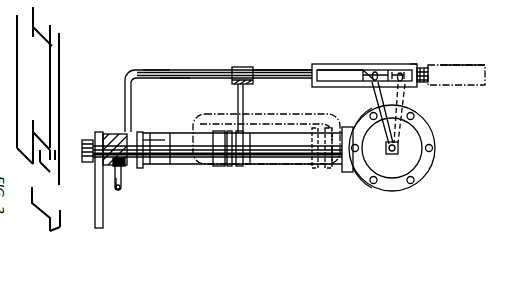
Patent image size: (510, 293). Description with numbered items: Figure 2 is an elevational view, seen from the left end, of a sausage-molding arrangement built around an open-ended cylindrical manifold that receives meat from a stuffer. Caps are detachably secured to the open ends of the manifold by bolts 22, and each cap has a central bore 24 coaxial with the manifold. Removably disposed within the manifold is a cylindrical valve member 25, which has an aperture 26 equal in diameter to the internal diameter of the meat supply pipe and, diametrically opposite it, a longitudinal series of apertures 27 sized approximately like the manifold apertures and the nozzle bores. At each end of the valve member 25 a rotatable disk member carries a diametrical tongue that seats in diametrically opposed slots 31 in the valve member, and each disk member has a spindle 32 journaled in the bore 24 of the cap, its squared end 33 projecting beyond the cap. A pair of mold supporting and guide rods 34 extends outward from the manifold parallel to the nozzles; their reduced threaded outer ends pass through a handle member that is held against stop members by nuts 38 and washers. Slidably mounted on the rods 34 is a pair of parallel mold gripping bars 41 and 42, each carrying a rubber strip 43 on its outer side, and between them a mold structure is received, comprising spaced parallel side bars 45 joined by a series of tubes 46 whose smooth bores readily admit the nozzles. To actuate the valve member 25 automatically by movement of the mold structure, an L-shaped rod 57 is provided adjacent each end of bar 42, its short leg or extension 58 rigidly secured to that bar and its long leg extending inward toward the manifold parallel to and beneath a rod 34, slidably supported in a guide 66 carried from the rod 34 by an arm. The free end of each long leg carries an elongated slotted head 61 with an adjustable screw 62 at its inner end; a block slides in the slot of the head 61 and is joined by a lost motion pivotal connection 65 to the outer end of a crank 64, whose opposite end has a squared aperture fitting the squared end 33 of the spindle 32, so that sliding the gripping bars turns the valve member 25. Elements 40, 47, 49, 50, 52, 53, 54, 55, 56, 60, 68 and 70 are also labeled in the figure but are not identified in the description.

The bolts 22 is at (413, 62).
The central bore 24 is at (470, 63).
The cylindrical valve member 25 is at (412, 152).
The aperture 26 is at (352, 160).
The apertures 27 is at (346, 170).
The slots 31 is at (160, 168).
The spindle 32 is at (258, 166).
The squared end 33 is at (397, 152).
The mold supporting and guide rods 34 is at (293, 158).
The nuts 38 is at (90, 138).
The tube 40 is at (160, 70).
The mold gripping bar 41 is at (176, 158).
The mold gripping bar 42 is at (180, 147).
The rubber strip 43 is at (230, 167).
The side bars 45 is at (218, 168).
The tubes 46 is at (167, 110).
The spring 47 is at (241, 167).
The pipe 49 is at (158, 136).
The pin 50 is at (124, 170).
The housing 52 is at (193, 117).
The packing 53 is at (110, 132).
The gland 54 is at (139, 168).
The block 55 is at (117, 134).
The pin 56 is at (118, 191).
The L-shaped rod 57 is at (97, 195).
The short leg or extension 58 is at (236, 67).
The rod 60 is at (342, 75).
The slotted head 61 is at (248, 96).
The adjustable screw 62 is at (421, 67).
The crank 64 is at (362, 72).
The lost motion pivotal connection 65 is at (377, 72).
The guides 66 is at (246, 72).
The elbow 68 is at (128, 82).
The link 70 is at (374, 100).